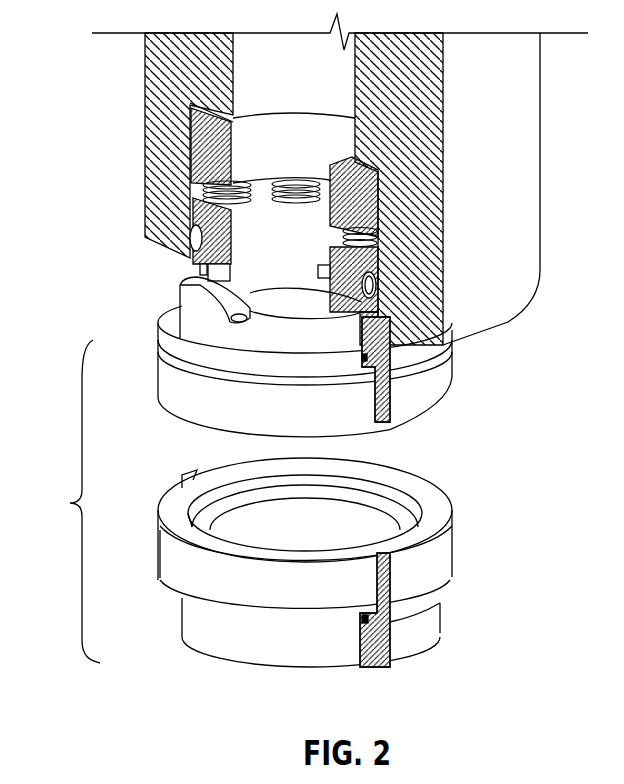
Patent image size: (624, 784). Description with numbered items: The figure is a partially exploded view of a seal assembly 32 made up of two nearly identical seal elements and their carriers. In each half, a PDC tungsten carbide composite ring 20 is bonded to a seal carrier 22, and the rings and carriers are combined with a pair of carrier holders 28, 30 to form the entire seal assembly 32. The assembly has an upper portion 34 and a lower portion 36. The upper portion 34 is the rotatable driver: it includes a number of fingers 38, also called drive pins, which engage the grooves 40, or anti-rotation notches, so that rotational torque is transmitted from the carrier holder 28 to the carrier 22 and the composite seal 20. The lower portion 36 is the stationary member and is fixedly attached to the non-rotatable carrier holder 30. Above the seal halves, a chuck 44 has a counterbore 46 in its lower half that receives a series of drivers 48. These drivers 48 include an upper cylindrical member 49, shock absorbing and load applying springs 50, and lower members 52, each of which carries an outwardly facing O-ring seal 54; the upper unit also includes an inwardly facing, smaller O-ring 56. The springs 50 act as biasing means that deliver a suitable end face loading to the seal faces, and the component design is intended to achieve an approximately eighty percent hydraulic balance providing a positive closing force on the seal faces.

The PDC tungsten carbide composite ring 20 is at (177, 417).
The seal carrier 22 is at (340, 417).
The carrier holder 28 is at (385, 380).
The carrier holder 30 is at (367, 660).
The seal assembly 32 is at (65, 501).
The upper portion 34 is at (165, 303).
The lower portion 36 is at (185, 650).
The fingers 38 is at (215, 272).
The grooves 40 is at (228, 319).
The chuck 44 is at (427, 257).
The counterbore 46 is at (190, 197).
The drivers 48 is at (265, 130).
The upper cylindrical member 49 is at (365, 193).
The shock absorbing and load applying springs 50 is at (380, 247).
The lower members 52 is at (380, 312).
The O-ring seal 54 is at (375, 290).
The O-ring 56 is at (367, 357).